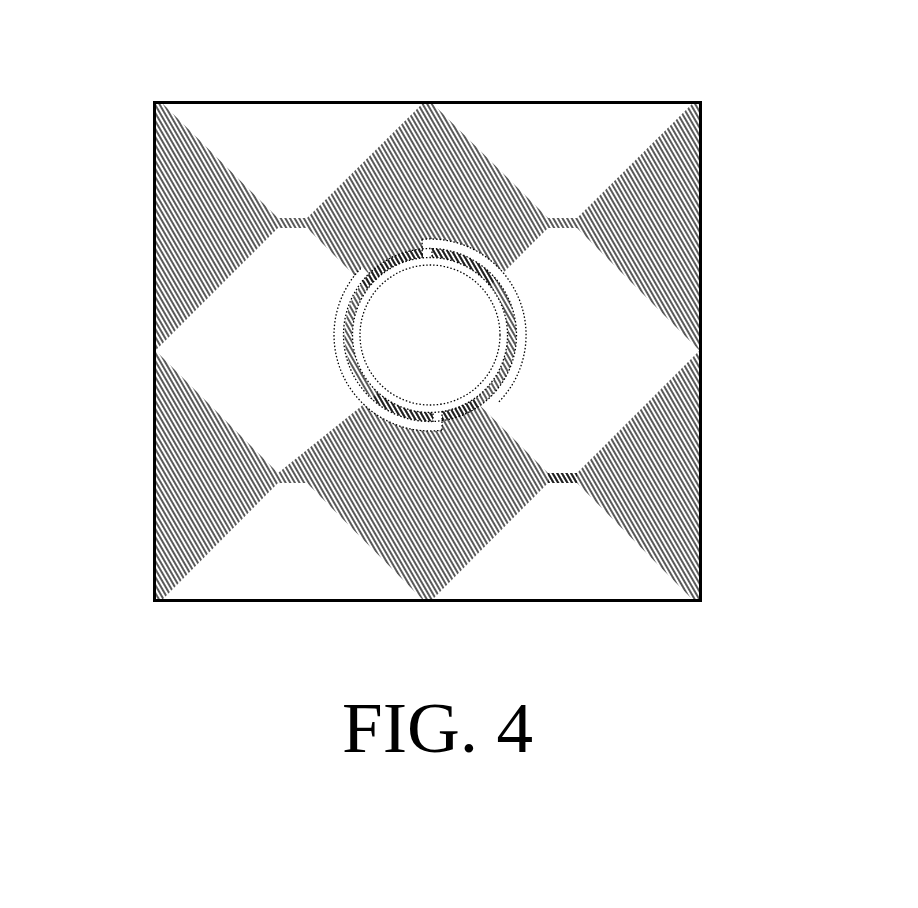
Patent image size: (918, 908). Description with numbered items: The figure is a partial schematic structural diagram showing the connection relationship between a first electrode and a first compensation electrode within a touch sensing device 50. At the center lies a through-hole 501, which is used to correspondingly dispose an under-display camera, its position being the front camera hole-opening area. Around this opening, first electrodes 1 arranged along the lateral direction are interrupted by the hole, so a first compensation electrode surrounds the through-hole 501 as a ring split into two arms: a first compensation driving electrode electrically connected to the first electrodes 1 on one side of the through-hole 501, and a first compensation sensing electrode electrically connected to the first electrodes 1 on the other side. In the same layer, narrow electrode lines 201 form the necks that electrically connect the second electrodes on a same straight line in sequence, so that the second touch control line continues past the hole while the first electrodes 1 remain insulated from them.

The touch sensing device 50 is at (148, 56).
The through-hole 501 is at (420, 316).
The first electrode 1 is at (457, 492).
The electrode line 201 is at (558, 482).